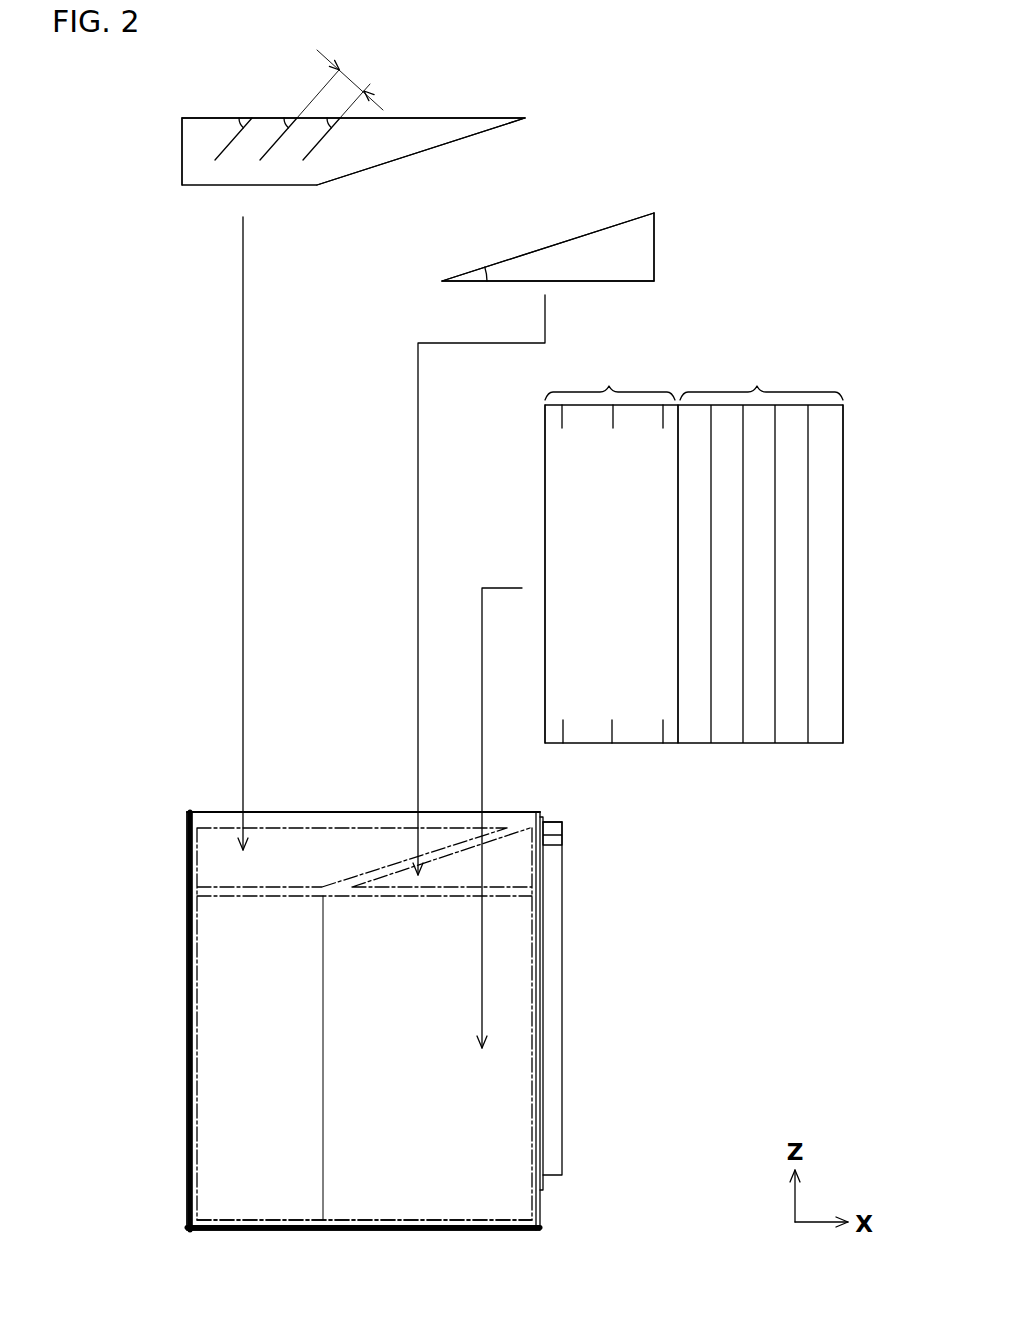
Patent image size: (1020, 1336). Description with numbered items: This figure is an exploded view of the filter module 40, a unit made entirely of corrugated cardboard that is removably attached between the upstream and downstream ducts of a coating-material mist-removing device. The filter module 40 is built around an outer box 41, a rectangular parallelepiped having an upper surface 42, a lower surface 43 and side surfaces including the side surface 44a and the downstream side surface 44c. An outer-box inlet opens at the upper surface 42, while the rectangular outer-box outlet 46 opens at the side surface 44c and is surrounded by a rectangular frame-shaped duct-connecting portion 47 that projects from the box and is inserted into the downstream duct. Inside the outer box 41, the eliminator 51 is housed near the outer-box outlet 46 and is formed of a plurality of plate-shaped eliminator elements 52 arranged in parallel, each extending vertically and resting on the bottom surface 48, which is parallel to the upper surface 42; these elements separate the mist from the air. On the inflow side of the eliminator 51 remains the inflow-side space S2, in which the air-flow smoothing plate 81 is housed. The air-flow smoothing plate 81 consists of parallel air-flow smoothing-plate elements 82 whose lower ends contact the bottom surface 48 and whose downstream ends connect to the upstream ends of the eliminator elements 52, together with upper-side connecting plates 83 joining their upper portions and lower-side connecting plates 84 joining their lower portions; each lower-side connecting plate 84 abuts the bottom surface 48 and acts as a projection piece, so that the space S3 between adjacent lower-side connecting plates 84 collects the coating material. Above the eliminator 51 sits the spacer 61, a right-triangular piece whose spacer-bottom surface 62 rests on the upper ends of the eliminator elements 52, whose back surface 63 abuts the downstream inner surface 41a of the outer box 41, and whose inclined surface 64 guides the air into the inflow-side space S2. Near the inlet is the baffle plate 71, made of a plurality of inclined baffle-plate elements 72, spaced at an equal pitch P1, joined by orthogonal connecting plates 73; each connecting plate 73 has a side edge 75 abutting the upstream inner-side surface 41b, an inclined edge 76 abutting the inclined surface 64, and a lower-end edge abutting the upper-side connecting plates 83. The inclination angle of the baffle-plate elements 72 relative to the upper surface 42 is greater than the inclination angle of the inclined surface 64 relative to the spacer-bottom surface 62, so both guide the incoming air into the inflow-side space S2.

The filter module 40 is at (750, 158).
The outer box 41 is at (188, 952).
The inner surface on the downstream side of the outer box 41a is at (540, 838).
The inner-side surface on the upstream side of the outer box 41b is at (193, 1087).
The upper surface 42 is at (355, 808).
The lower surface 43 is at (426, 1232).
The side surface 44a is at (186, 1146).
The side surface of the downstream side 44c is at (545, 840).
The outer-box outlet 46 is at (541, 1120).
The duct-connecting portion 47 is at (552, 1027).
The bottom surface 48 is at (294, 1225).
The eliminator 51 is at (757, 386).
The eliminator element 52 is at (833, 712).
The spacer 61 is at (655, 253).
The spacer-bottom surface 62 is at (558, 283).
The back surface 63 is at (657, 232).
The inclined surface 64 is at (579, 235).
The baffle plate 71 is at (197, 117).
The baffle-plate element 72 is at (220, 162).
The connecting plate 73 is at (476, 128).
The side edge 75 is at (181, 173).
The inclined edge 76 is at (428, 156).
The air-flow smoothing plate 81 is at (609, 386).
The air-flow smoothing-plate element 82 is at (572, 641).
The upper-side connecting plate 83 is at (562, 428).
The lower-side connecting plate 84 is at (562, 729).
The pitch between adjacent baffle-plate elements P1 is at (352, 81).
The inflow-side space S2 is at (227, 1171).
The space between adjacent lower-side connecting plates S3 is at (587, 726).